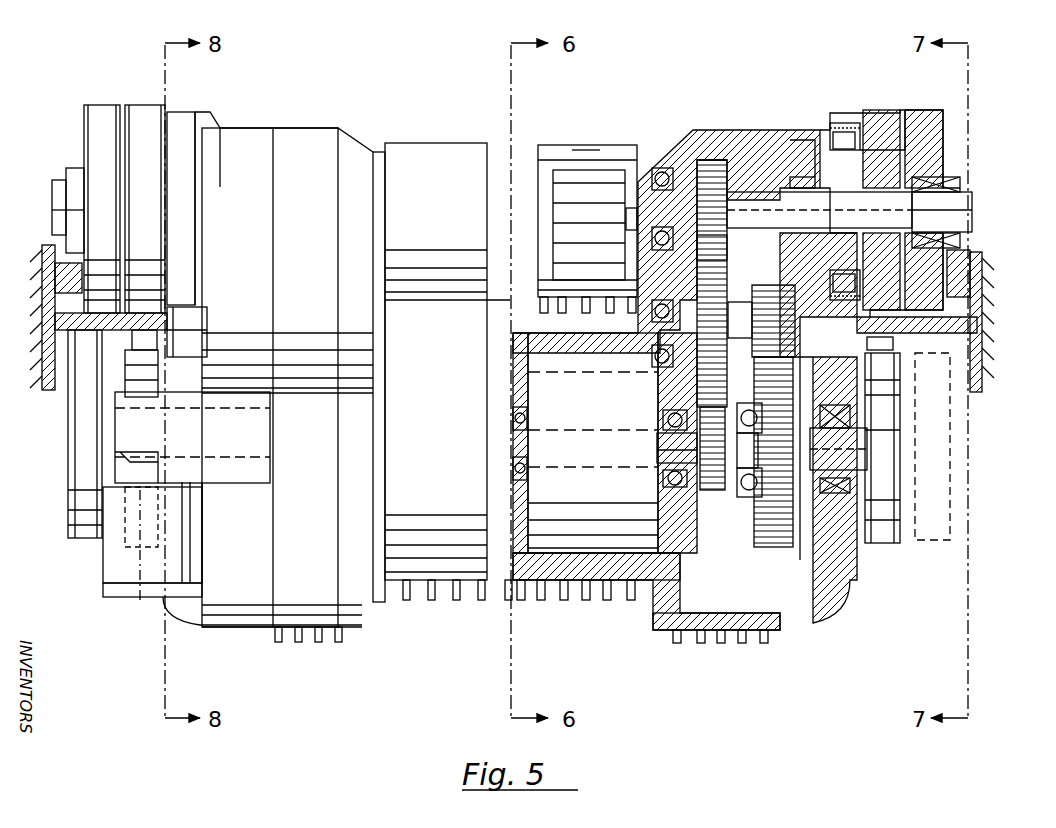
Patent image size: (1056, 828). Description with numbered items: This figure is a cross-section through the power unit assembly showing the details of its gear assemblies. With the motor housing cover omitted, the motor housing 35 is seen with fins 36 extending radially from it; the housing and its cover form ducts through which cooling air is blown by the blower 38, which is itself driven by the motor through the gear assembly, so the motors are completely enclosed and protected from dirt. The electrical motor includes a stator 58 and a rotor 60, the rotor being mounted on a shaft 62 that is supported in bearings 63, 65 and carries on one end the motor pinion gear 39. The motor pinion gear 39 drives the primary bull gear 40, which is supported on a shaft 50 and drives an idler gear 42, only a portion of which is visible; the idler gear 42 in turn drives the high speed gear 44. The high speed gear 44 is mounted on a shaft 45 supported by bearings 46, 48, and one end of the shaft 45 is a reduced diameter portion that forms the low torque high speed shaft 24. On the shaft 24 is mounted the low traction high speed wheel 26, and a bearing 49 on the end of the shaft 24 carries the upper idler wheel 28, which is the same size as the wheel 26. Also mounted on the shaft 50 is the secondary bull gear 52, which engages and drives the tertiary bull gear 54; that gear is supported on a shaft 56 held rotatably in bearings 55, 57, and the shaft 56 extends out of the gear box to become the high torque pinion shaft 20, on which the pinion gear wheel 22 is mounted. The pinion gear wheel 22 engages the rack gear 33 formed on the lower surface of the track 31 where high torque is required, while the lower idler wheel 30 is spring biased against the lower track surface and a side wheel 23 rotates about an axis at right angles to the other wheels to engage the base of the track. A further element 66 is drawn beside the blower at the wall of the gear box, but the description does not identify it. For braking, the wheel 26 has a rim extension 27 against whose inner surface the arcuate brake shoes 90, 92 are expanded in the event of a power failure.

The high torque pinion shaft 20 is at (900, 450).
The pinion gear wheel 22 is at (158, 375).
The side wheel 23 is at (65, 265).
The low torque high speed shaft 24 is at (960, 210).
The low traction high speed wheel 26 is at (150, 106).
The rim extension 27 is at (842, 123).
The upper idler wheel 28 is at (110, 106).
The lower idler wheel 30 is at (68, 405).
The track 31 is at (40, 310).
The rack gear 33 is at (155, 340).
The motor housing 35 is at (555, 580).
The fins 36 is at (700, 632).
The blower 38 is at (592, 175).
The motor pinion gear 39 is at (740, 468).
The primary bull gear 40 is at (725, 360).
The idler gear 42 is at (727, 243).
The high speed gear 44 is at (712, 160).
The shaft 45 is at (748, 192).
The bearing 46 is at (663, 168).
The bearing 48 is at (808, 176).
The bearing 49 is at (975, 178).
The shaft 50 is at (742, 302).
The secondary bull gear 52 is at (780, 282).
The tertiary bull gear 54 is at (775, 548).
The bearing 55 is at (748, 470).
The shaft 56 is at (745, 497).
The bearing 57 is at (840, 495).
The stator 58 is at (640, 540).
The rotor 60 is at (610, 490).
The motor shaft 62 is at (665, 440).
The bearing 63 is at (522, 410).
The bearing 65 is at (672, 410).
The spacer 66 is at (631, 208).
The brake shoe 90 is at (844, 141).
The brake shoe 92 is at (844, 283).